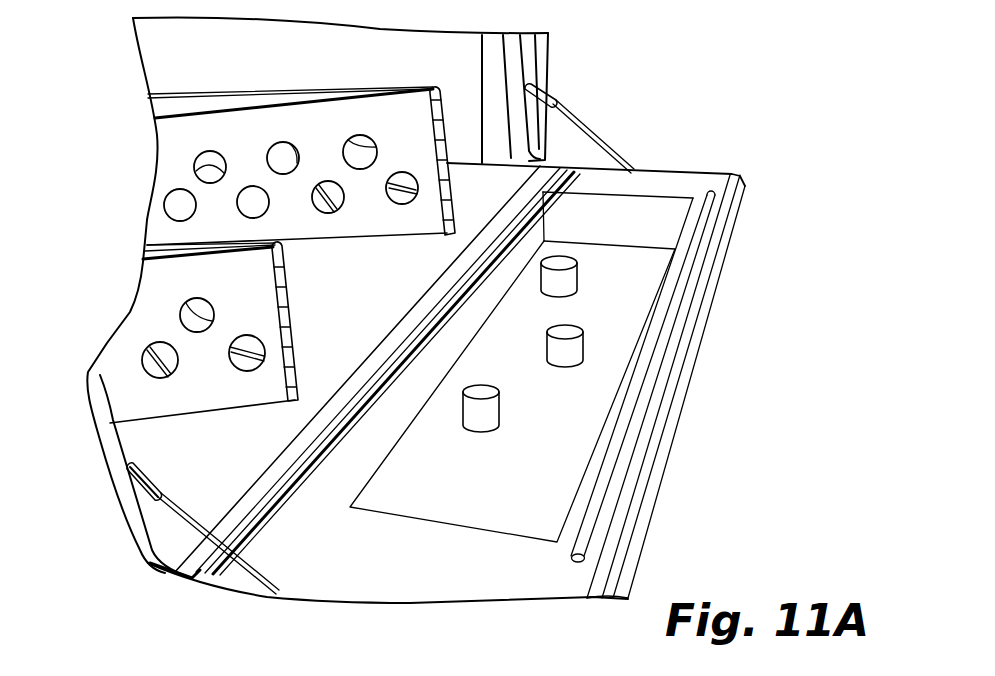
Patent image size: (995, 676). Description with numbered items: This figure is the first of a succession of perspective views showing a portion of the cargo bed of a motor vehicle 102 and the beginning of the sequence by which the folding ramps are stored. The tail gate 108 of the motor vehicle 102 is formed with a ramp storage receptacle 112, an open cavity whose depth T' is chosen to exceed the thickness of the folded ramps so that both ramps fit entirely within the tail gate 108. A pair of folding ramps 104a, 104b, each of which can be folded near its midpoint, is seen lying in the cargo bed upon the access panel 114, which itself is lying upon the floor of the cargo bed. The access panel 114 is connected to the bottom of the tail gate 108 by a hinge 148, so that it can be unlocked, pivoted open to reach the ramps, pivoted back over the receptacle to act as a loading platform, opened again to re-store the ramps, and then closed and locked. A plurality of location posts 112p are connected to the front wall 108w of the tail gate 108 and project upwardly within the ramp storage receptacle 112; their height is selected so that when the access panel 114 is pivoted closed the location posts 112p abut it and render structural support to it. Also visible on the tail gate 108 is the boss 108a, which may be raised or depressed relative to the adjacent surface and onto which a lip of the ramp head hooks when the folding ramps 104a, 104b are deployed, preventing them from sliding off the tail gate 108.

The motor vehicle 102 is at (608, 133).
The tail gate 108 is at (687, 172).
The boss 108a is at (584, 543).
The front wall 108w is at (548, 497).
The ramp storage receptacle 112 is at (660, 228).
The location posts 112p is at (550, 288).
The access panel 114 is at (282, 280).
The folding ramp 104a is at (226, 404).
The folding ramp 104b is at (348, 238).
The hinge 148 is at (262, 507).
The depth of the ramp storage receptacle T' is at (624, 243).